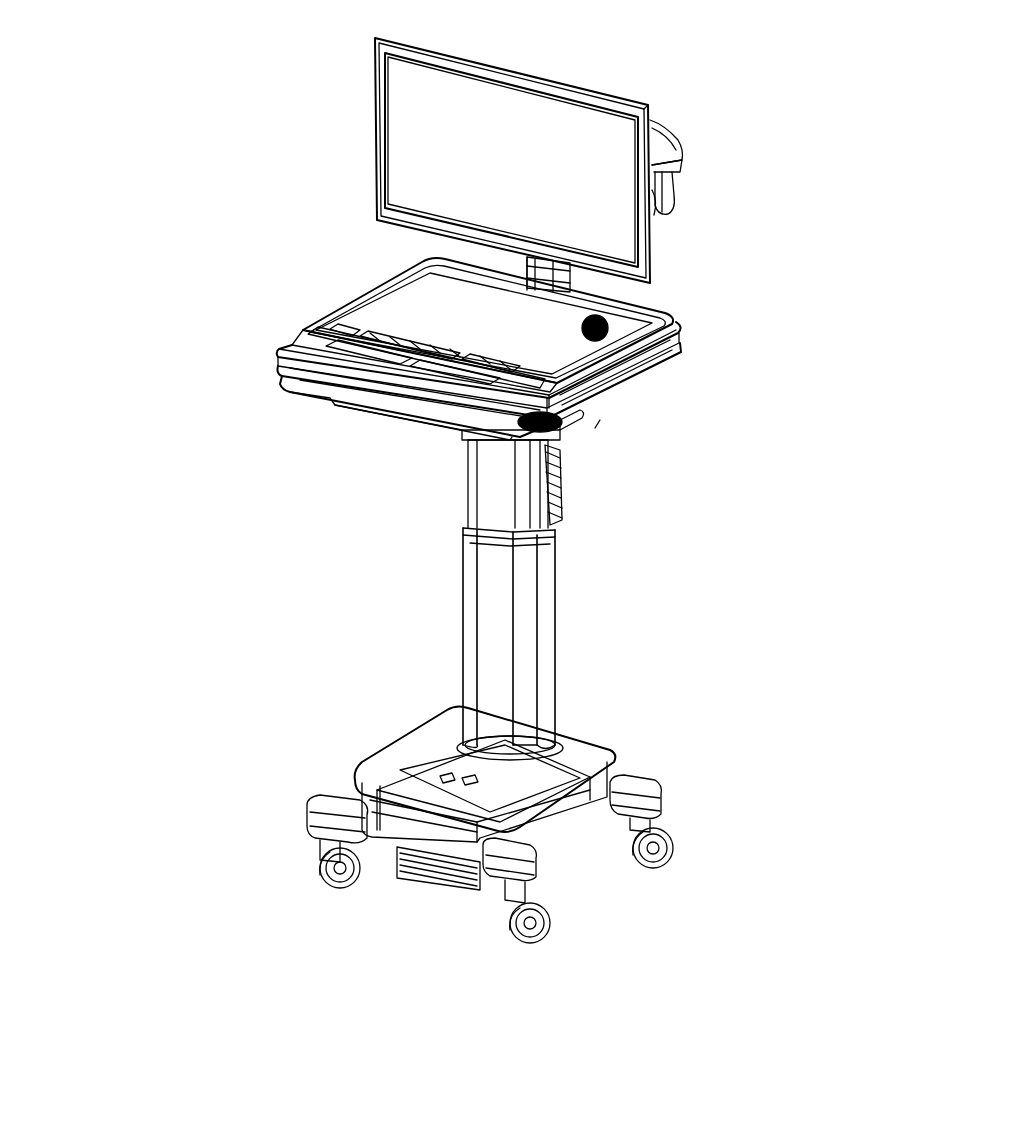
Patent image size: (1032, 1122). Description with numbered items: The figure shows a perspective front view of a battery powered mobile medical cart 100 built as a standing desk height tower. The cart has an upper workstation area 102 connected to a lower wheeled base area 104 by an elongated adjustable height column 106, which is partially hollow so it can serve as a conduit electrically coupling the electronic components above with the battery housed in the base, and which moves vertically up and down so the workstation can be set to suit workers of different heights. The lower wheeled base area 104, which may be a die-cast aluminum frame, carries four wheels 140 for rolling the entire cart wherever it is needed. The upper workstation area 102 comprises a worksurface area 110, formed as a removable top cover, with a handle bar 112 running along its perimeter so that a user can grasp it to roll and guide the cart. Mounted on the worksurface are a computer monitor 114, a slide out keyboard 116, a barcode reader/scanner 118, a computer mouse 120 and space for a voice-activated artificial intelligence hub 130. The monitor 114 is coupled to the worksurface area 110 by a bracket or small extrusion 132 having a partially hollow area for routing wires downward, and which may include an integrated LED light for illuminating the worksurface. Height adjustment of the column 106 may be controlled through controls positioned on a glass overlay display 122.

The battery powered mobile medical cart 100 is at (742, 130).
The upper workstation area 102 is at (158, 25).
The lower wheeled base area 104 is at (205, 728).
The adjustable height column 106 is at (528, 641).
The worksurface area 110 is at (392, 280).
The handle bar 112 is at (285, 352).
The computer monitor 114 is at (512, 160).
The keyboard 116 is at (400, 416).
The barcode reader/scanner 118 is at (670, 165).
The computer mouse 120 is at (560, 420).
The glass overlay display 122 is at (306, 322).
The artificial intelligence hub 130 is at (608, 328).
The bracket or small extrusion 132 is at (583, 278).
The wheels 140 is at (323, 890).